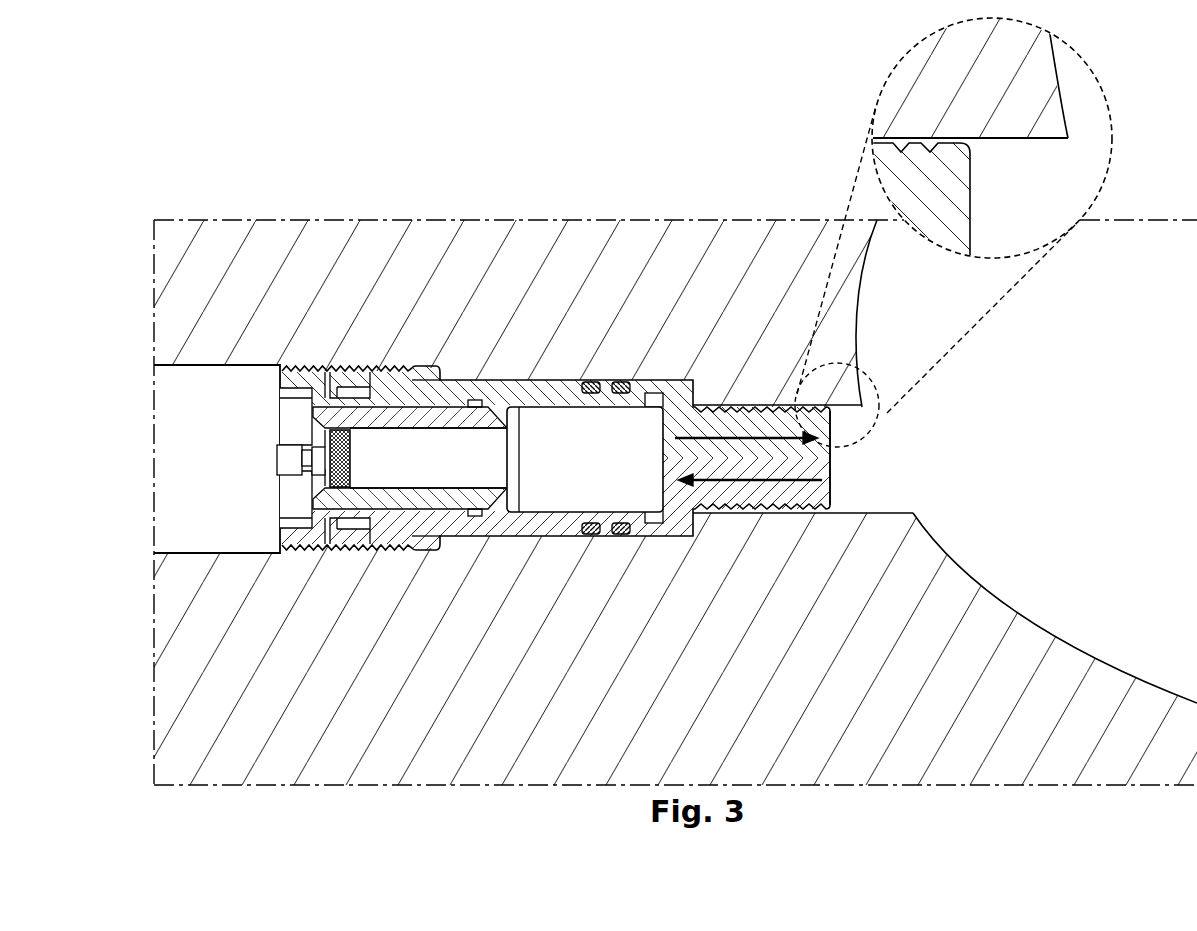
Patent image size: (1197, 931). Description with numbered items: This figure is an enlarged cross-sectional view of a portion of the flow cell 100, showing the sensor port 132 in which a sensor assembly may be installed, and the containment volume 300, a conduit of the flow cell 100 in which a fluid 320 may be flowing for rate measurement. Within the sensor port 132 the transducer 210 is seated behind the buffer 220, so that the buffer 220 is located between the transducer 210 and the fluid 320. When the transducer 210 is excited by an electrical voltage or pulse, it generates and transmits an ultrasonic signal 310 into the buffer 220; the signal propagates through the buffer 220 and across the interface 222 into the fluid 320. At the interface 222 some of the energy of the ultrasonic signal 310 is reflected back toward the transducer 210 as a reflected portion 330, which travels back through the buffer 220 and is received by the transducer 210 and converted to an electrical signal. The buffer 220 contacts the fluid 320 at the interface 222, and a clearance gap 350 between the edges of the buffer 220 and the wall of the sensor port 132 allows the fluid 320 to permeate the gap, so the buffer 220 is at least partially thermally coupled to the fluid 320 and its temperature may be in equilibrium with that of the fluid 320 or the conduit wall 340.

The flow cell 100 is at (496, 289).
The sensor port 132 is at (198, 562).
The transducer 210 is at (572, 480).
The buffer 220 is at (784, 490).
The interface 222 is at (843, 478).
The containment volume 300 is at (1175, 558).
The ultrasonic signal 310 is at (746, 430).
The fluid 320 is at (1083, 351).
The reflected portion 330 is at (750, 472).
The conduit wall 340 is at (876, 513).
The clearance gap 350 is at (833, 411).